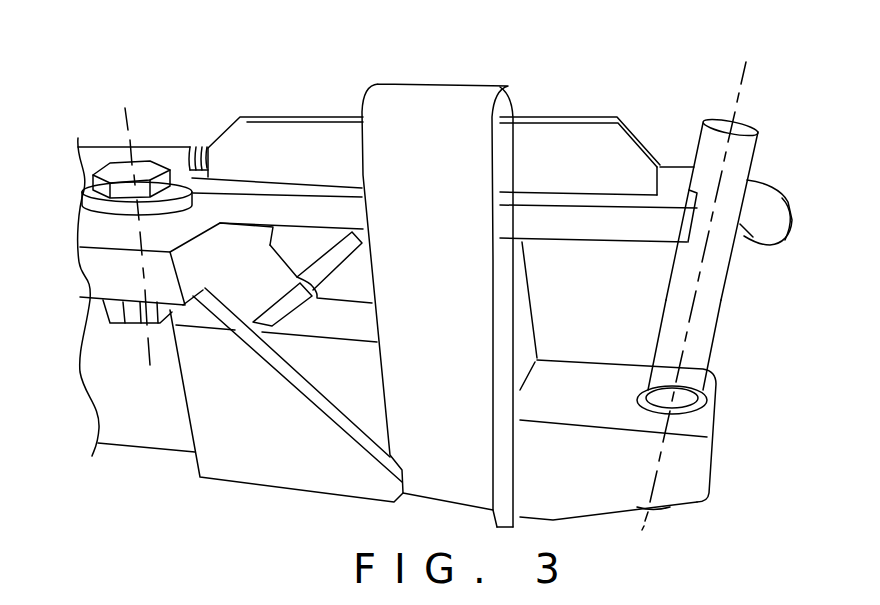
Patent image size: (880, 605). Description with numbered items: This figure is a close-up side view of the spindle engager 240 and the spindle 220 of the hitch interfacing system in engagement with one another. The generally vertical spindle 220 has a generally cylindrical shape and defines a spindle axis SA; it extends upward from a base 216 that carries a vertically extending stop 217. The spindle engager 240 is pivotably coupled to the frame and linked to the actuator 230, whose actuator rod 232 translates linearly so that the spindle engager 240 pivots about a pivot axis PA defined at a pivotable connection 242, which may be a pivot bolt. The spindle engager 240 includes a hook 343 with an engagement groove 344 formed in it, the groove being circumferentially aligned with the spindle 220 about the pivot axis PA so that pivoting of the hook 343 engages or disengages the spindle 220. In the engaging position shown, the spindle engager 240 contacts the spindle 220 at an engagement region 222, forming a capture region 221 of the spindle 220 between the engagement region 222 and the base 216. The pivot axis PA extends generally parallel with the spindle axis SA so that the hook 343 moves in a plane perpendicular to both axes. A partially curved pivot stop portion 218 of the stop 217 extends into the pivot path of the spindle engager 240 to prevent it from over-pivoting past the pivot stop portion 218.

The pivot axis PA is at (137, 267).
The pivotable connection 242 is at (117, 153).
The actuator 230 is at (154, 138).
The actuator rod 232 is at (175, 148).
The pivot stop portion 218 is at (470, 97).
The spindle engager 240 is at (586, 110).
The hook 343 is at (677, 165).
The stop 217 is at (524, 263).
The base 216 is at (706, 401).
The capture region 221 is at (665, 302).
The spindle 220 is at (745, 155).
The engagement region 222 is at (728, 208).
The engagement groove 344 is at (753, 240).
The spindle axis SA is at (744, 90).